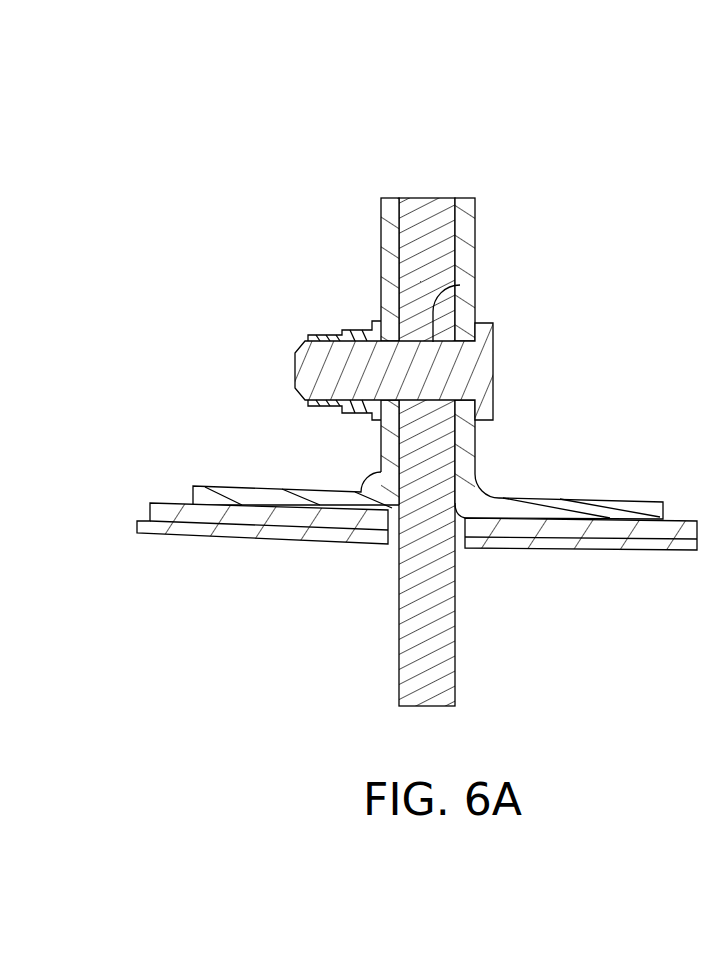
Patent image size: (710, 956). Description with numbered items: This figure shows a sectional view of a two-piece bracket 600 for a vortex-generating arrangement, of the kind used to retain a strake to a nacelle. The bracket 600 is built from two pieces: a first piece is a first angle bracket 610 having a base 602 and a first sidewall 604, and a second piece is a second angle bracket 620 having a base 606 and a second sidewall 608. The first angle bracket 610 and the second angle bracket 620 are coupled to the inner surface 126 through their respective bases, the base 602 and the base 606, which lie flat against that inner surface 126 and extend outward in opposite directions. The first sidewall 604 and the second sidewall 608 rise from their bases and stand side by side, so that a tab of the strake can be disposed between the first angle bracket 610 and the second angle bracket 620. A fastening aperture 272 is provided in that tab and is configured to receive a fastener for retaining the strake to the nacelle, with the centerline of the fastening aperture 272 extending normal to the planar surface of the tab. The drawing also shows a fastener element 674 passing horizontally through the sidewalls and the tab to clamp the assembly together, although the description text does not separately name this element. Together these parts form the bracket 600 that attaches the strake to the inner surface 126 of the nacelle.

The bracket 600 is at (383, 124).
The base 602 is at (597, 499).
The first sidewall 604 is at (475, 266).
The base 606 is at (267, 487).
The second sidewall 608 is at (380, 272).
The first angle bracket 610 is at (475, 228).
The second angle bracket 620 is at (380, 220).
The fastening aperture 272 is at (460, 285).
The nut 674 is at (493, 380).
The inner surface 126 is at (138, 521).